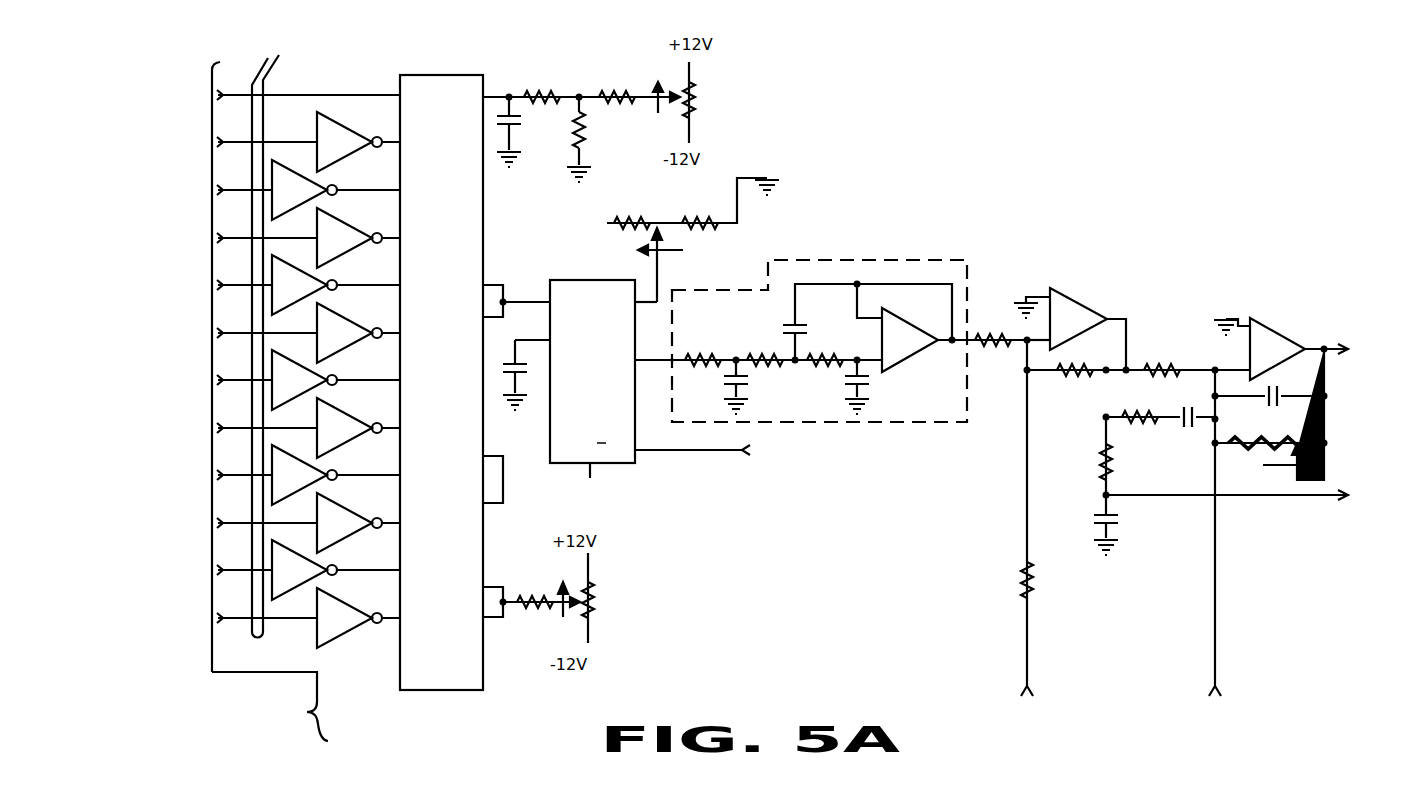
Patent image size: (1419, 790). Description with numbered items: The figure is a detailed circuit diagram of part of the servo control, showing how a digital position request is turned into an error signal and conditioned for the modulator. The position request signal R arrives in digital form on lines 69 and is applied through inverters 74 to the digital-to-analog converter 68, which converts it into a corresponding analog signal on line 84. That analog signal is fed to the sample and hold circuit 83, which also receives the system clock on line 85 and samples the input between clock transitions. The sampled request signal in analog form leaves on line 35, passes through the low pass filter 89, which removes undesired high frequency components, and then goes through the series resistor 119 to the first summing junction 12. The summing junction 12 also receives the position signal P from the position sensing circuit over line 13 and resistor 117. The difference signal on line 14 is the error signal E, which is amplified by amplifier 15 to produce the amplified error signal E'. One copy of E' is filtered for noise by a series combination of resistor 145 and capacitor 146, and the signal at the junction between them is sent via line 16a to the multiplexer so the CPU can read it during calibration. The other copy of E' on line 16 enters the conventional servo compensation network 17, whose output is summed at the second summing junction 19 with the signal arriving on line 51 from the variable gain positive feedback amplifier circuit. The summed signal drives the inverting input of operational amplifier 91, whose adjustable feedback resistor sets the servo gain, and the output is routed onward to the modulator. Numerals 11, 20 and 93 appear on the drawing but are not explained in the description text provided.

The lines 69 is at (264, 399).
The inverters 74 is at (318, 188).
The digital-to-analog (D/A) converter 68 is at (440, 75).
The line 84 is at (526, 292).
The sample and hold (S/H) circuit 83 is at (588, 280).
The line 85 is at (676, 452).
The line 35 is at (648, 358).
The low pass filter 89 is at (905, 264).
The series resistor 119 is at (985, 330).
The first summing junction 12 is at (1025, 336).
The node connection line 11 is at (1016, 355).
The amplifier 15 is at (1072, 300).
The line 14 is at (1040, 345).
The line 16 is at (1130, 338).
The second summing junction 19 is at (1215, 366).
The line 51 is at (1215, 567).
The operational amplifier 91 is at (1270, 330).
The output line to 80 20 is at (1333, 343).
The potentiometer 93 is at (1298, 441).
The servo compensation network 17 is at (1152, 430).
The resistor 145 is at (1100, 462).
The capacitor 146 is at (1098, 512).
The line 16a is at (1320, 500).
The resistor 117 is at (1033, 588).
The line 13 is at (1027, 640).